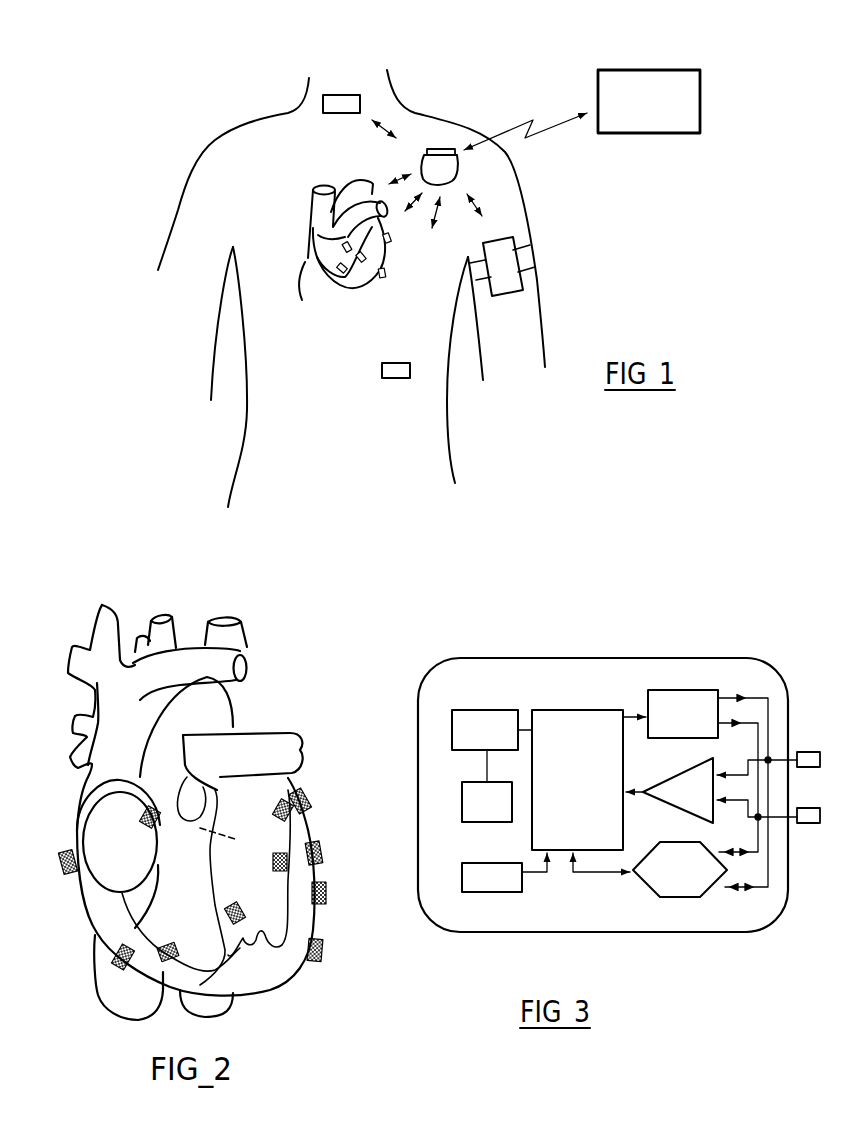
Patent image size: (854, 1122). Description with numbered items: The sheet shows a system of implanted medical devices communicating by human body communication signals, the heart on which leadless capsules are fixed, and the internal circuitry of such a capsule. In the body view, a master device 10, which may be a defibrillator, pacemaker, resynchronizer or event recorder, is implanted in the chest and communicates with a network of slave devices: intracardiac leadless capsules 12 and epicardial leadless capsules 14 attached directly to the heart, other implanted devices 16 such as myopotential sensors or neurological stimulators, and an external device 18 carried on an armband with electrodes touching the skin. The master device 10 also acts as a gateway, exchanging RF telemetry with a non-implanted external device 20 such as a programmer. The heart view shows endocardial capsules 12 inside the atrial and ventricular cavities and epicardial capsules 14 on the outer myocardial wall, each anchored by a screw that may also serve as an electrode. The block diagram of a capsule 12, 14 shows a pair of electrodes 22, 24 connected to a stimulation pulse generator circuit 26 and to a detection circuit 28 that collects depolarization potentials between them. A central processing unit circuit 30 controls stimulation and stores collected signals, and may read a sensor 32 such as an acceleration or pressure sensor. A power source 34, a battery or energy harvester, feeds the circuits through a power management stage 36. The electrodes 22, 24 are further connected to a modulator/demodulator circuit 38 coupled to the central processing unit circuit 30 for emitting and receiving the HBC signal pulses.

In FIG. 1, the master device 10 is at (426, 158).
In FIG. 1, the intracardiac leadless capsule 12 is at (333, 285).
In FIG. 2, the intracardiac leadless capsule 12 is at (140, 824).
In FIG. 3, the intracardiac leadless capsule 12 is at (604, 631).
In FIG. 1, the epicardial leadless capsule 14 is at (385, 275).
In FIG. 2, the epicardial leadless capsule 14 is at (60, 860).
In FIG. 3, the epicardial leadless capsule 14 is at (603, 744).
In FIG. 1, the other implanted device 16 is at (344, 98).
In FIG. 1, the external device 18 is at (517, 287).
In FIG. 1, the external device 20 is at (651, 85).
In FIG. 3, the electrode 22 is at (807, 752).
In FIG. 3, the electrode 24 is at (807, 824).
In FIG. 3, the stimulation pulse generator circuit 26 is at (680, 700).
In FIG. 3, the detection circuit 28 is at (687, 787).
In FIG. 3, the central processing unit circuit 30 is at (565, 720).
In FIG. 3, the sensor 32 is at (500, 888).
In FIG. 3, the power source 34 is at (463, 805).
In FIG. 3, the power management stage 36 is at (480, 725).
In FIG. 3, the modulator/demodulator circuit 38 is at (680, 892).